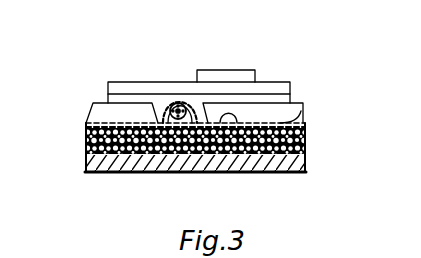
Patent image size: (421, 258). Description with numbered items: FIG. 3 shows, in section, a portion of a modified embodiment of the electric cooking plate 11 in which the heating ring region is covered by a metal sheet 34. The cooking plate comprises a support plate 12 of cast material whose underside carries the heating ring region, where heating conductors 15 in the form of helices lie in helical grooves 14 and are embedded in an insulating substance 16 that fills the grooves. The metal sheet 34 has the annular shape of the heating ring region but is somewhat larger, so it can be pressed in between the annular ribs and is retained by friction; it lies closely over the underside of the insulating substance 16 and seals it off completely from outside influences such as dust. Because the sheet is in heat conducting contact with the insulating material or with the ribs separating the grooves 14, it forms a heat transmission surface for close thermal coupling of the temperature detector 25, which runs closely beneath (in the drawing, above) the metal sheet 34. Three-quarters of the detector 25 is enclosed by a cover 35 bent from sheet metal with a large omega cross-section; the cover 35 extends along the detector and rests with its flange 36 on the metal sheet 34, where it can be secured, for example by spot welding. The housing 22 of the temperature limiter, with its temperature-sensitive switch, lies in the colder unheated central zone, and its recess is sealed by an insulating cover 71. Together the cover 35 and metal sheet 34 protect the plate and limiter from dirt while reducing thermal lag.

The electric cooking plate 11 is at (99, 182).
The support plate 12 is at (129, 160).
The helical grooves 14 is at (307, 165).
The heating conductors 15 is at (306, 143).
The insulating substance 16 is at (86, 148).
The housing 22 is at (279, 90).
The temperature detector 25 is at (180, 98).
The metal sheet 34 is at (305, 117).
The cover 35 is at (205, 103).
The flange 36 is at (136, 103).
The insulating cover 71 is at (240, 82).